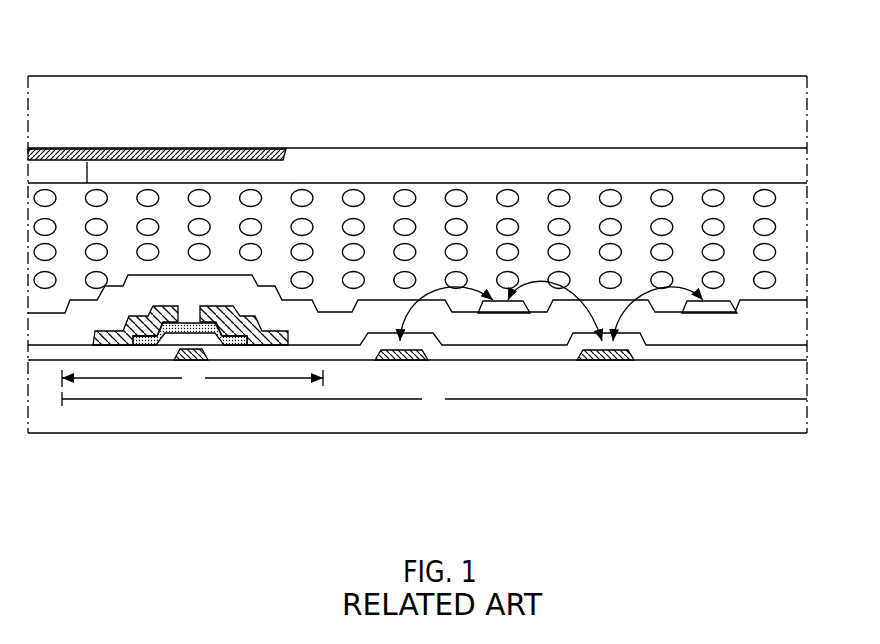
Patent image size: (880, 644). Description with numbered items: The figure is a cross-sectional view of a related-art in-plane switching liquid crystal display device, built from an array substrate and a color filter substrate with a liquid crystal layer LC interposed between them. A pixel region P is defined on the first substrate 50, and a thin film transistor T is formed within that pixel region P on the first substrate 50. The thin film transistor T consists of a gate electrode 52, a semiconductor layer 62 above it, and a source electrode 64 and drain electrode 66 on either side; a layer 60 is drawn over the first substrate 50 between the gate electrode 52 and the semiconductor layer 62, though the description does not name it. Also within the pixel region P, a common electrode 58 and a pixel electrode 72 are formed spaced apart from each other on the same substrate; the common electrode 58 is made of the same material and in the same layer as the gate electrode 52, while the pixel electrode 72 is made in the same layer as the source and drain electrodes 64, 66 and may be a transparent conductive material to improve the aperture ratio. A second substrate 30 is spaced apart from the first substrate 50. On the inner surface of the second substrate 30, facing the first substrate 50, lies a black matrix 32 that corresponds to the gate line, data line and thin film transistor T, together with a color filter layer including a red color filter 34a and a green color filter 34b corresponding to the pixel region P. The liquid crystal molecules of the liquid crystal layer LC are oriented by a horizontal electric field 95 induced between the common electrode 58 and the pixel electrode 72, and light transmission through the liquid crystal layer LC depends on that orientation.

The second substrate 30 is at (446, 124).
The black matrix 32 is at (217, 150).
The red color filter 34a is at (72, 170).
The green color filter 34b is at (688, 157).
The liquid crystal layer LC is at (790, 214).
The horizontal electric field 95 is at (580, 298).
The first substrate 50 is at (766, 424).
The gate electrode 52 is at (185, 362).
The gate insulating layer 60 is at (355, 357).
The semiconductor layer 62 is at (238, 347).
The source electrode 64 is at (165, 305).
The drain electrode 66 is at (218, 304).
The common electrode 58 is at (413, 360).
The pixel electrode 72 is at (507, 309).
The thin film transistor T is at (192, 378).
The pixel region P is at (434, 400).